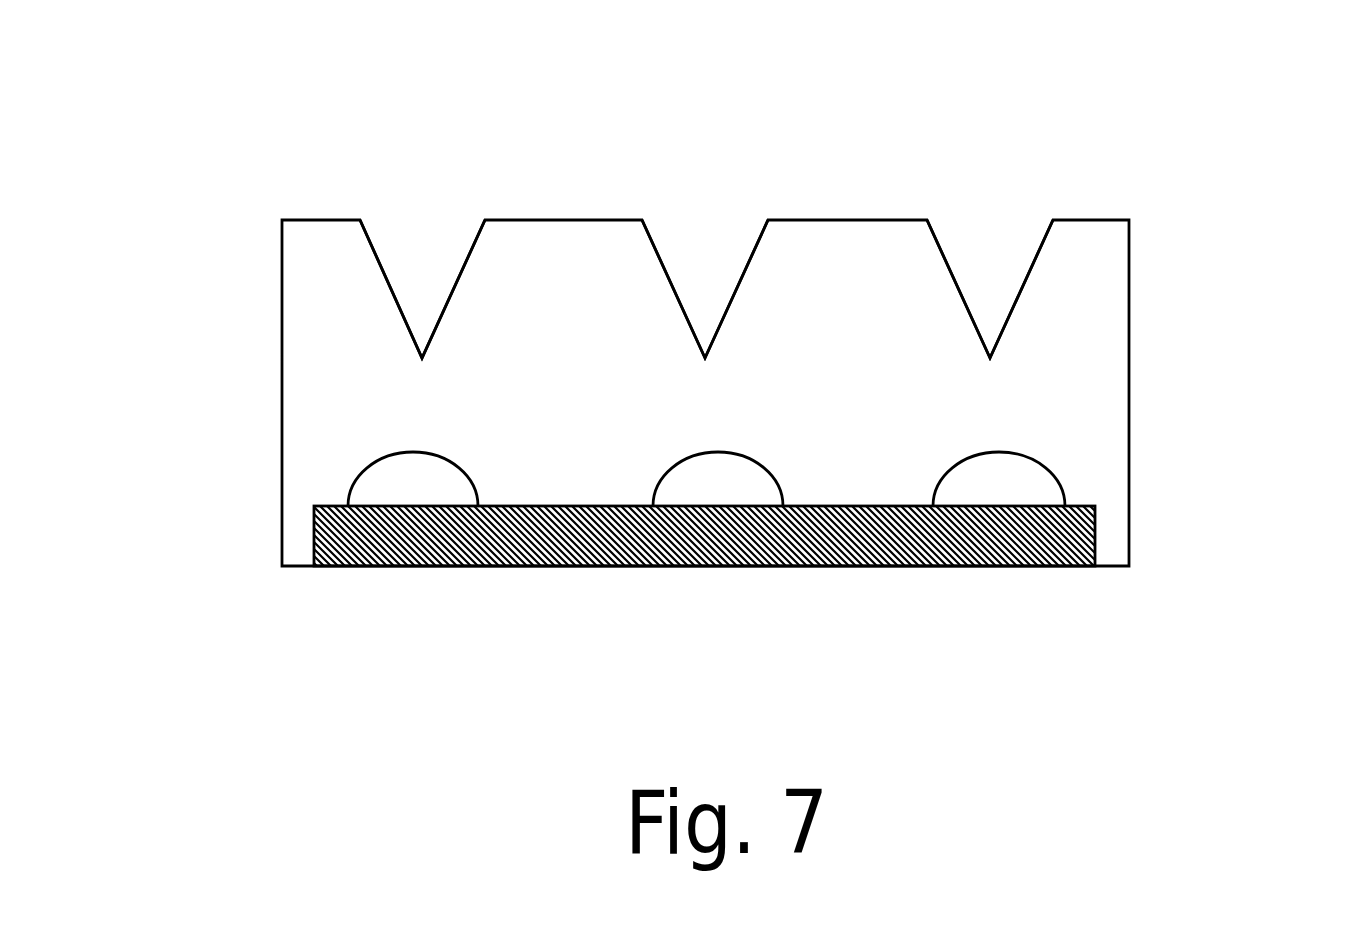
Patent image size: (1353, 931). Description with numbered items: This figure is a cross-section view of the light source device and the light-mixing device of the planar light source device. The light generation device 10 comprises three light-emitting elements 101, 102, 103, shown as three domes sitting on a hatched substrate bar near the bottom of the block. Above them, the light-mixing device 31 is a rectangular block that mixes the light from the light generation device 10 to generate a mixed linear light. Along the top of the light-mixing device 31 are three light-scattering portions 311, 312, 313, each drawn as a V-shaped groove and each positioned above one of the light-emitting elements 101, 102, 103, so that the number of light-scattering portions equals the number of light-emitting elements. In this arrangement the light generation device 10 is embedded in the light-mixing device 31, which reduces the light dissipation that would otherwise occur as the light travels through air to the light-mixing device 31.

The light generation device 10 is at (1095, 506).
The light-emitting element 101 is at (405, 482).
The light-emitting element 102 is at (730, 490).
The light-emitting element 103 is at (1013, 482).
The light-mixing device 31 is at (335, 405).
The light-scattering portion 311 is at (458, 273).
The light-scattering portion 312 is at (655, 246).
The light-scattering portion 313 is at (946, 260).